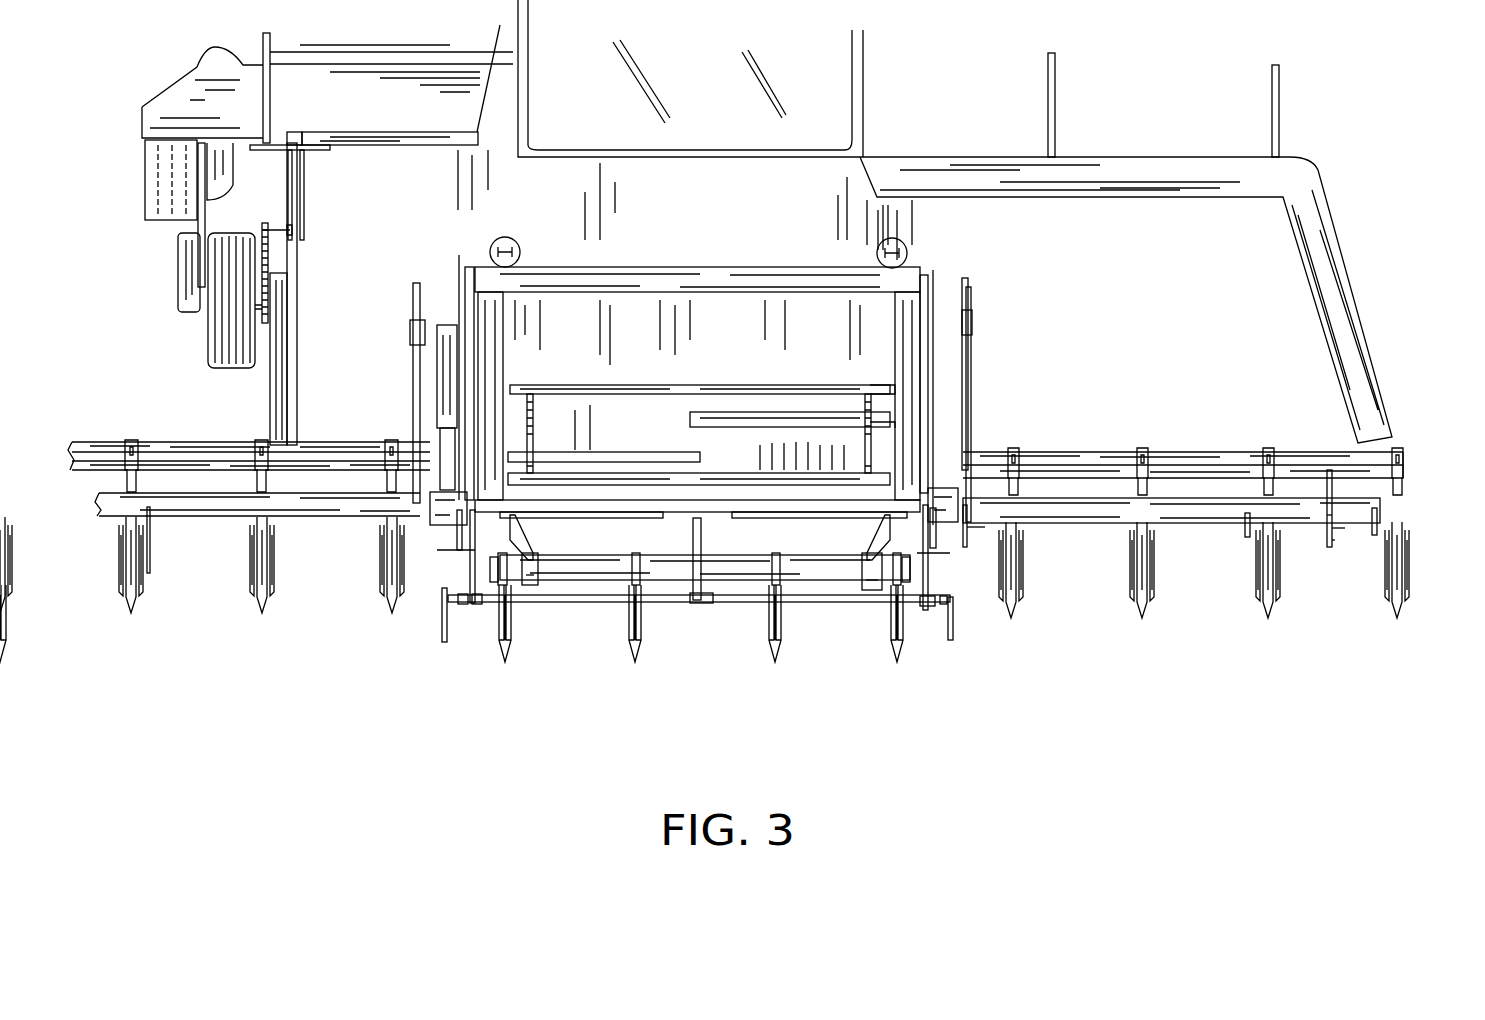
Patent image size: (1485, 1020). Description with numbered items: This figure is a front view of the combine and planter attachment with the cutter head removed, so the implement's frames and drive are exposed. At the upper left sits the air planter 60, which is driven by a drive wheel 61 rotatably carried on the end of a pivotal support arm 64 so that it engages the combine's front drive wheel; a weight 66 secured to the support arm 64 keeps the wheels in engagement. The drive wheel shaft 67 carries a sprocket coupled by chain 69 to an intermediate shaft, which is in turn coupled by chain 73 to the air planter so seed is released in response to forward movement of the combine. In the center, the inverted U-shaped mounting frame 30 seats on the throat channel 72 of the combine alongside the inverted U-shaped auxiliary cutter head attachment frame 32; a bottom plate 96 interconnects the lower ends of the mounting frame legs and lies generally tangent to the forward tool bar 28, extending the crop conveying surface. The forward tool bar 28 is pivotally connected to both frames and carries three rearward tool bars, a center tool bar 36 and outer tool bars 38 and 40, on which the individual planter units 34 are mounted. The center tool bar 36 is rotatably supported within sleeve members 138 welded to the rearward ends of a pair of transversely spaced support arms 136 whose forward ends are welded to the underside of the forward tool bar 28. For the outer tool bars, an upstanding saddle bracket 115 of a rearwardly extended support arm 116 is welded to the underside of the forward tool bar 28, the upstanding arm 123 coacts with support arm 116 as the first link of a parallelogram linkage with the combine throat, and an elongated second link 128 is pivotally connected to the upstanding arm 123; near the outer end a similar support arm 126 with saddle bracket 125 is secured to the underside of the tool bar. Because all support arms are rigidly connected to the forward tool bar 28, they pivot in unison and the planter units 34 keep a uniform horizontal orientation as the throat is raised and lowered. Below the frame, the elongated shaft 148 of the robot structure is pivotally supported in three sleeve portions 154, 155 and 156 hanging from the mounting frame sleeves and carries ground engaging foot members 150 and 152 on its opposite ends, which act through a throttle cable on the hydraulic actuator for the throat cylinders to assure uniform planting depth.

The air planter 60 is at (165, 88).
The channel 72 is at (280, 228).
The chain 73 is at (305, 212).
The pivotal support arm 64 is at (205, 232).
The weight 66 is at (178, 270).
The chain 69 is at (268, 262).
The drive wheel 61 is at (220, 348).
The drive wheel shaft 67 is at (255, 322).
The outer tool bar 40 is at (340, 445).
The planter units 34 is at (245, 582).
The auxiliary cutter head attachment frame 32 is at (741, 268).
The mounting frame 30 is at (946, 279).
The second link 128 is at (972, 312).
The upstanding arm 123 is at (971, 376).
The bottom plate 96 is at (767, 445).
The saddle bracket 115 is at (960, 500).
The support arm 116 is at (967, 545).
The outer tool bar 38 is at (1218, 445).
The forward tool bar 28 is at (1072, 506).
The saddle bracket 125 is at (1326, 517).
The support arm 126 is at (1336, 542).
The support arms 136 is at (528, 545).
The sleeve members 138 is at (530, 582).
The sleeve portion 156 is at (700, 604).
The shaft 148 is at (745, 603).
The center tool bar 36 is at (826, 572).
The sleeve portion 155 is at (930, 610).
The foot member 150 is at (953, 618).
The foot member 152 is at (440, 615).
The sleeve portion 154 is at (478, 604).